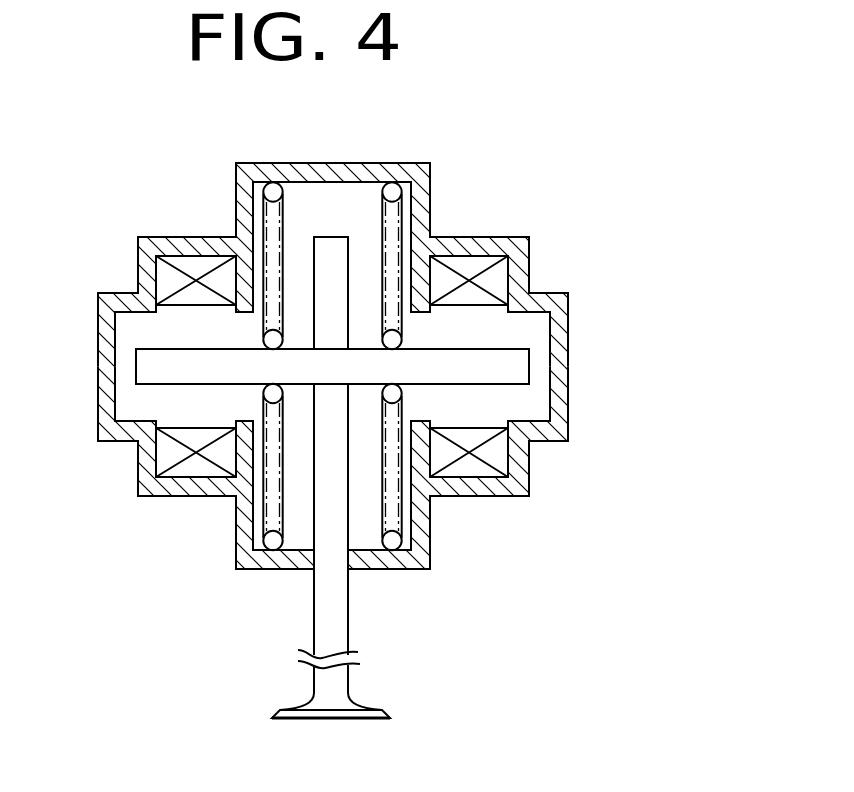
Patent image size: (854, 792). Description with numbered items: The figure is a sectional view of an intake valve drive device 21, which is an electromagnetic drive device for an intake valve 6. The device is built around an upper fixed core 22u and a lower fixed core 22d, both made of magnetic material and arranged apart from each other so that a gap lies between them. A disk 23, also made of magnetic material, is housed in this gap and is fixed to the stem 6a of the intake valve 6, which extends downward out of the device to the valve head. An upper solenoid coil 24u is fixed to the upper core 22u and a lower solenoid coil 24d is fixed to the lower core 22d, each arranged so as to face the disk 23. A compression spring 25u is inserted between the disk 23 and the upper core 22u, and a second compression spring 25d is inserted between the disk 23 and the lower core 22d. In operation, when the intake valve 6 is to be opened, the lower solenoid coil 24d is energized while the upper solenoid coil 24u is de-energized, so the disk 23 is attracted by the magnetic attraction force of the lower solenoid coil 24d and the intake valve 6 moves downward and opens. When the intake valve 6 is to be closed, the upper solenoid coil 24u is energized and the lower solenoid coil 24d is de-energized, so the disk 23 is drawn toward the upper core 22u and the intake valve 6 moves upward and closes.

The intake valve drive device 21 is at (614, 158).
The upper fixed core 22u is at (520, 263).
The lower fixed core 22d is at (520, 478).
The disk 23 is at (517, 372).
The upper solenoid coil 24u is at (176, 279).
The lower solenoid coil 24d is at (174, 454).
The compression spring 25u is at (273, 218).
The compression spring 25d is at (272, 513).
The intake valve 6 is at (340, 695).
The stem 6a is at (337, 255).